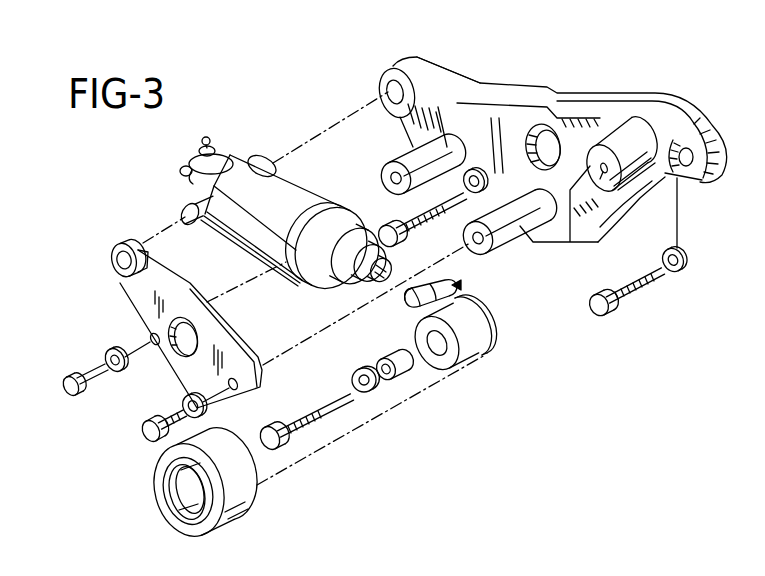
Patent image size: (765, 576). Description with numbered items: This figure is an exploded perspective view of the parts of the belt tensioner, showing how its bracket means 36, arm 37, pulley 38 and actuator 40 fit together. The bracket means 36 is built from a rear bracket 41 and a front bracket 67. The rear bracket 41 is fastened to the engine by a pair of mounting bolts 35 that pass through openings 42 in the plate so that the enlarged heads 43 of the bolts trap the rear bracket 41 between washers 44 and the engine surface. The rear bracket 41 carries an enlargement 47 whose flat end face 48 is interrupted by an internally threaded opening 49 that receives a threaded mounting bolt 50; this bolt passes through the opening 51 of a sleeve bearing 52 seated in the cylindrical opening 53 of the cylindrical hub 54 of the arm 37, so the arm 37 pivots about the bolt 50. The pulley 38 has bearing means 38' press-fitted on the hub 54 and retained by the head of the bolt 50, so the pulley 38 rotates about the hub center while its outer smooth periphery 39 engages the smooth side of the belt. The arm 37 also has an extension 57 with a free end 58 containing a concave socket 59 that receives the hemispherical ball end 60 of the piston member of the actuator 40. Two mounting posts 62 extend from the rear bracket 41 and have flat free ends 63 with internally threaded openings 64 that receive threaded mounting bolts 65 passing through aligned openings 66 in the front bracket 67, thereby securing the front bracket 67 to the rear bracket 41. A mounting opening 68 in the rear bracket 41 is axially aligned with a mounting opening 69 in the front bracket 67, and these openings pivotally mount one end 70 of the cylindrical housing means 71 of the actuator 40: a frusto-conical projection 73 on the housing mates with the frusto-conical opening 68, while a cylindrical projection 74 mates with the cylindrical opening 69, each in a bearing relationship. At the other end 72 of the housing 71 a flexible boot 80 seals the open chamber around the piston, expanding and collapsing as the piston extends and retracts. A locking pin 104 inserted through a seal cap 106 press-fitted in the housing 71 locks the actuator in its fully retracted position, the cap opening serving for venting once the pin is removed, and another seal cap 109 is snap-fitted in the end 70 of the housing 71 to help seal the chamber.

The mounting bolts 35 is at (420, 222).
The bracket means 36 is at (422, 57).
The arm 37 is at (392, 374).
The pulley 38 is at (190, 493).
The bearing means 38' is at (155, 492).
The outer smooth periphery 39 is at (238, 515).
The actuator 40 is at (231, 243).
The rear bracket 41 is at (447, 108).
The openings 42 is at (547, 120).
The enlarged heads 43 is at (380, 233).
The washers 44 is at (474, 170).
The enlargement 47 is at (634, 120).
The flat end face 48 is at (620, 186).
The internally threaded opening 49 is at (596, 150).
The mounting bolt 50 is at (287, 405).
The opening 51 is at (363, 362).
The sleeve bearing 52 is at (402, 373).
The cylindrical opening 53 is at (443, 370).
The cylindrical hub 54 is at (467, 357).
The extension 57 is at (462, 283).
The free end 58 is at (422, 287).
The concave socket 59 is at (403, 300).
The ball end 60 is at (370, 290).
The mounting posts 62 is at (410, 150).
The flat free ends 63 is at (402, 180).
The internally threaded openings 64 is at (390, 182).
The mounting bolts 65 is at (143, 424).
The openings 66 is at (215, 382).
The front bracket 67 is at (130, 305).
The mounting opening 68 is at (390, 80).
The mounting opening 69 is at (112, 253).
The end 70 is at (190, 182).
The cylindrical housing means 71 is at (262, 190).
The end 72 is at (312, 213).
The projection 73 is at (268, 163).
The projection 74 is at (182, 210).
The flexible boot 80 is at (319, 290).
The locking pin 104 is at (208, 138).
The seal cap 106 is at (201, 157).
The seal cap 109 is at (182, 169).